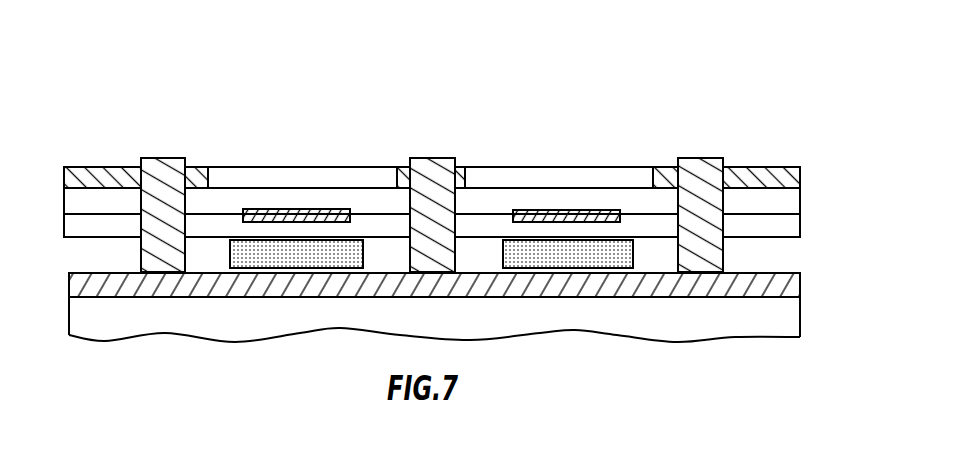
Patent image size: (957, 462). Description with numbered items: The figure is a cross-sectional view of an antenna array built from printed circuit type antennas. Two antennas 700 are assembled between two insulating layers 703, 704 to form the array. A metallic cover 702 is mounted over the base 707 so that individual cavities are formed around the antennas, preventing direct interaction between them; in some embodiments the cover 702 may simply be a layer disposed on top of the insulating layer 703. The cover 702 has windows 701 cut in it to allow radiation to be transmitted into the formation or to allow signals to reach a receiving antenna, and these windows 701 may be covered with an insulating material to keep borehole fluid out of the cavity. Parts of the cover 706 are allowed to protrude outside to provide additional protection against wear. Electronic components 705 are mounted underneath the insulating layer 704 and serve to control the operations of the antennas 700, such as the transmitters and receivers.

The antenna 700 is at (278, 209).
The window 701 is at (545, 167).
The metallic cover 702 is at (800, 182).
The insulating layer 703 is at (800, 203).
The insulating layer 704 is at (800, 227).
The electronic component 705 is at (597, 270).
The protruding part of cover 706 is at (430, 158).
The base 707 is at (670, 298).